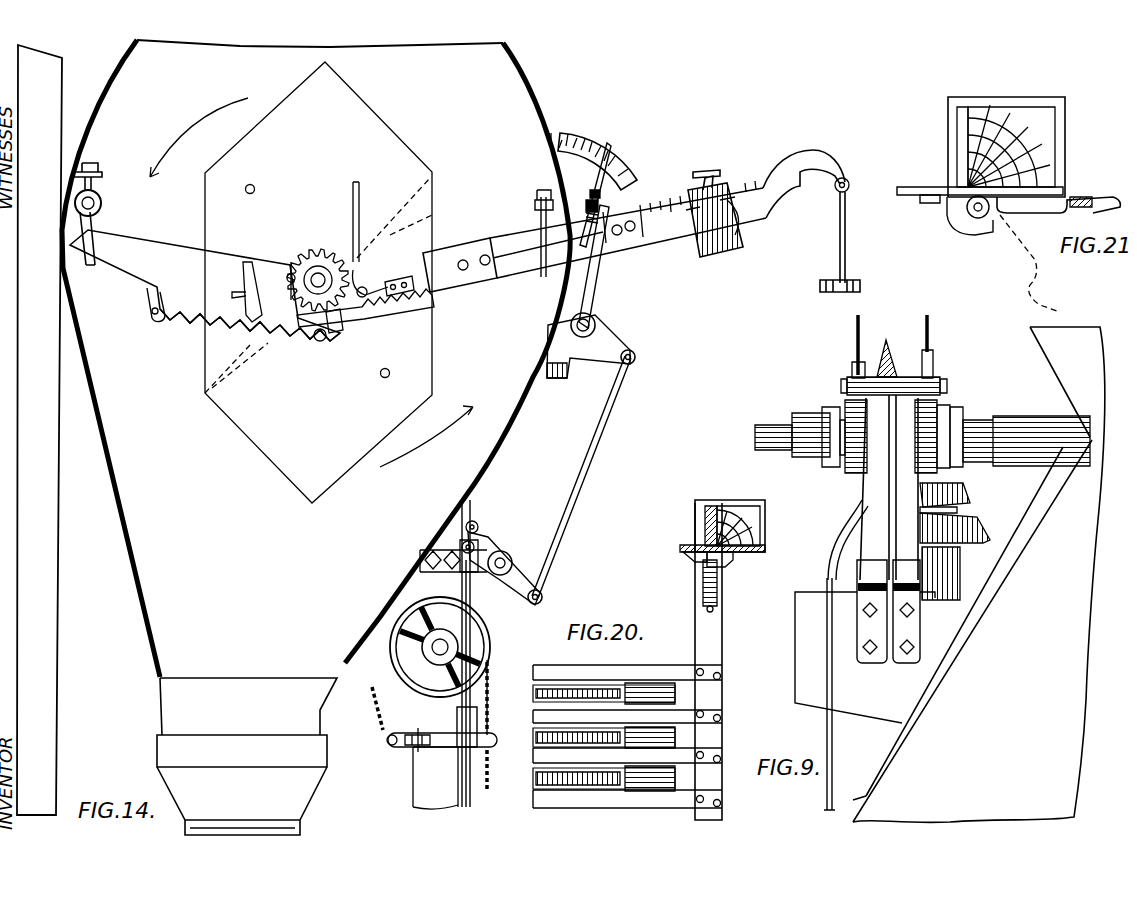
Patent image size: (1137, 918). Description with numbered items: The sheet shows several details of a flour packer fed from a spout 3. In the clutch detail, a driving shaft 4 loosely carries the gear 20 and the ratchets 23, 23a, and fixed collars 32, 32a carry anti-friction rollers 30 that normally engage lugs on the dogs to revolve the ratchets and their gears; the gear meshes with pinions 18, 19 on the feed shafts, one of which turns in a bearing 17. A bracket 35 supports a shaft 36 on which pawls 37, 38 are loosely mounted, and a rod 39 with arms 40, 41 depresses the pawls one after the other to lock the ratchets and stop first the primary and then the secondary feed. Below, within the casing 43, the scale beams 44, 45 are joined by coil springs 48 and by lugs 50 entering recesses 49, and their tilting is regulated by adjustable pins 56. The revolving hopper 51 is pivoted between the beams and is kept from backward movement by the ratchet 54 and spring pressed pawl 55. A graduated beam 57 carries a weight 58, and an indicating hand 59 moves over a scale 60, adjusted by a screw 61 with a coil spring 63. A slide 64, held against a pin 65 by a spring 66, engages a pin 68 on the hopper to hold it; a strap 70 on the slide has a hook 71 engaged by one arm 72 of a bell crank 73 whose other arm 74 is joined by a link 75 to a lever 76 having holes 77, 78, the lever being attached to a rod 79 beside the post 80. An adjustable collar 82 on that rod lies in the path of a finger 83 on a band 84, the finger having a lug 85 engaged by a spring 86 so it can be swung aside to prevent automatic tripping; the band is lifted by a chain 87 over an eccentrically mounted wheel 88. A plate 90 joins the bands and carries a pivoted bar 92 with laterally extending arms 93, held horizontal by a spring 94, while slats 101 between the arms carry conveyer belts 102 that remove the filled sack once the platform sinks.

In FIG. 9, the spout 3 is at (979, 574).
In FIG. 9, the driving shaft 4 is at (770, 430).
In FIG. 9, the bearing 17 is at (946, 590).
In FIG. 9, the pinion 18 is at (977, 520).
In FIG. 9, the pinion 19 is at (970, 492).
In FIG. 9, the gear 20 is at (881, 352).
In FIG. 9, the ratchet 23 is at (846, 507).
In FIG. 9, the ratchet 23a is at (940, 402).
In FIG. 9, the anti-friction roller 30 is at (947, 470).
In FIG. 9, the collar 32 is at (823, 466).
In FIG. 9, the collar 32a is at (964, 411).
In FIG. 9, the bracket 35 is at (888, 529).
In FIG. 9, the shaft 36 is at (948, 385).
In FIG. 9, the pawl 37 is at (851, 367).
In FIG. 9, the pawl 38 is at (935, 363).
In FIG. 14, the rod 39 is at (361, 188).
In FIG. 9, the rod 39 is at (825, 573).
In FIG. 9, the arm 40 is at (856, 340).
In FIG. 9, the arm 41 is at (930, 333).
In FIG. 14, the shell or casing 43 is at (88, 365).
In FIG. 14, the scale beam 44 is at (503, 239).
In FIG. 14, the scale beam 45 is at (205, 285).
In FIG. 14, the coil spring 48 is at (217, 325).
In FIG. 14, the recess 49 is at (243, 293).
In FIG. 14, the lug 50 is at (287, 278).
In FIG. 14, the revolving hopper 51 is at (318, 282).
In FIG. 14, the ratchet 54 is at (308, 253).
In FIG. 14, the spring pressed pawl 55 is at (356, 276).
In FIG. 14, the adjustable pin 56 is at (327, 334).
In FIG. 14, the graduated beam 57 is at (677, 227).
In FIG. 14, the weight 58 is at (727, 249).
In FIG. 14, the indicating hand 59 is at (587, 195).
In FIG. 14, the scale 60 is at (620, 148).
In FIG. 14, the screw 61 is at (598, 209).
In FIG. 14, the coil spring 63 is at (608, 212).
In FIG. 14, the slide 64 is at (453, 252).
In FIG. 14, the pin 65 is at (404, 280).
In FIG. 14, the spring 66 is at (387, 302).
In FIG. 14, the pin 68 is at (387, 369).
In FIG. 14, the strap 70 is at (527, 250).
In FIG. 14, the hook 71 is at (622, 210).
In FIG. 14, the arm 72 is at (592, 263).
In FIG. 14, the bell crank 73 is at (596, 323).
In FIG. 14, the arm 74 is at (613, 347).
In FIG. 14, the link 75 is at (624, 378).
In FIG. 14, the lever 76 is at (513, 567).
In FIG. 14, the hole 77 is at (478, 522).
In FIG. 14, the hole 78 is at (476, 539).
In FIG. 14, the rod 79 is at (471, 797).
In FIG. 20, the rod 79 is at (750, 563).
In FIG. 21, the rod 79 is at (1078, 195).
In FIG. 14, the post 80 is at (435, 778).
In FIG. 20, the post 80 is at (740, 507).
In FIG. 21, the post 80 is at (1043, 123).
In FIG. 14, the adjustable collar 82 is at (475, 710).
In FIG. 14, the finger 83 is at (484, 731).
In FIG. 20, the finger 83 is at (735, 565).
In FIG. 21, the finger 83 is at (1093, 218).
In FIG. 20, the band 84 is at (765, 510).
In FIG. 21, the band 84 is at (1060, 152).
In FIG. 21, the lug 85 is at (992, 217).
In FIG. 14, the spring 86 is at (418, 745).
In FIG. 21, the spring 86 is at (968, 233).
In FIG. 14, the chain 87 is at (488, 777).
In FIG. 14, the eccentrically mounted wheel 88 is at (485, 631).
In FIG. 14, the plate 90 is at (414, 795).
In FIG. 20, the plate 90 is at (705, 517).
In FIG. 21, the plate 90 is at (962, 138).
In FIG. 20, the bar 92 is at (723, 640).
In FIG. 20, the arm 93 is at (687, 810).
In FIG. 20, the spring 94 is at (718, 585).
In FIG. 20, the slat 101 is at (585, 785).
In FIG. 20, the conveyer belt 102 is at (643, 782).